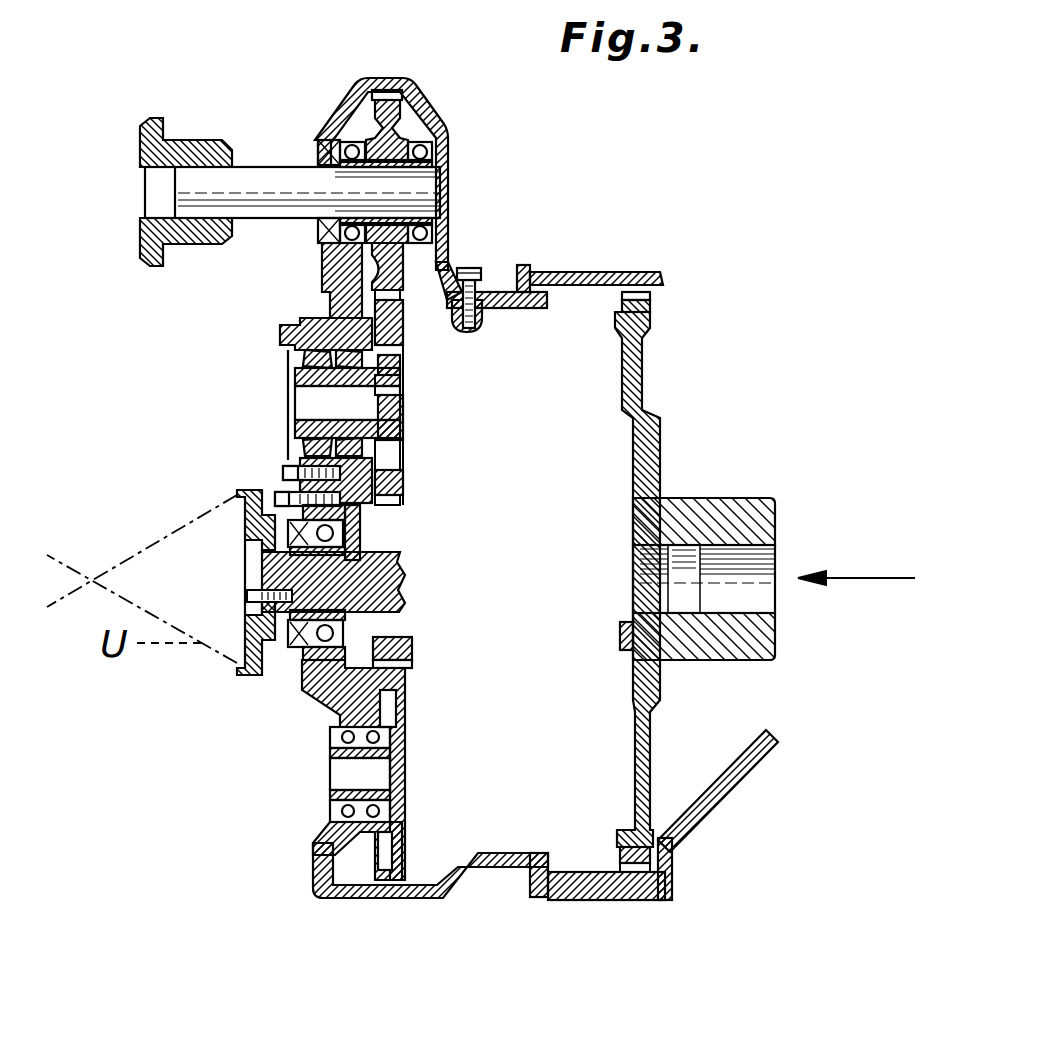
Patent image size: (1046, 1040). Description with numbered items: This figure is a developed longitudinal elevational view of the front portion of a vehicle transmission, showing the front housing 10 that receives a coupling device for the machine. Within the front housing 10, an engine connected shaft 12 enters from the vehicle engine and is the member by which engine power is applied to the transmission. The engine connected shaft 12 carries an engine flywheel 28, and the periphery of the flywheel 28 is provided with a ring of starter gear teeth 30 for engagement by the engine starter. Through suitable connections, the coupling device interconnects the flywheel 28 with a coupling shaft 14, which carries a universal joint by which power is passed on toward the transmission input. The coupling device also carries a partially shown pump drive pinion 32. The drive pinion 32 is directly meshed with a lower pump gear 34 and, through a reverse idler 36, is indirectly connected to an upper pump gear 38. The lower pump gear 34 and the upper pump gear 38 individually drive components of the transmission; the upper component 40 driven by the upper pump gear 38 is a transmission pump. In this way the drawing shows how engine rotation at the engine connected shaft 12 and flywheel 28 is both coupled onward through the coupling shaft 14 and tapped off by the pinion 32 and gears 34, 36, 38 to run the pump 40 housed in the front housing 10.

The front housing 10 is at (455, 885).
The engine connected shaft 12 is at (748, 650).
The coupling shaft 14 is at (283, 620).
The engine flywheel 28 is at (653, 707).
The ring of starter gear teeth 30 is at (635, 878).
The pump drive pinion 32 is at (412, 640).
The lower pump gear 34 is at (400, 832).
The reverse idler 36 is at (398, 305).
The upper pump gear 38 is at (393, 272).
The upper component 40 is at (167, 237).